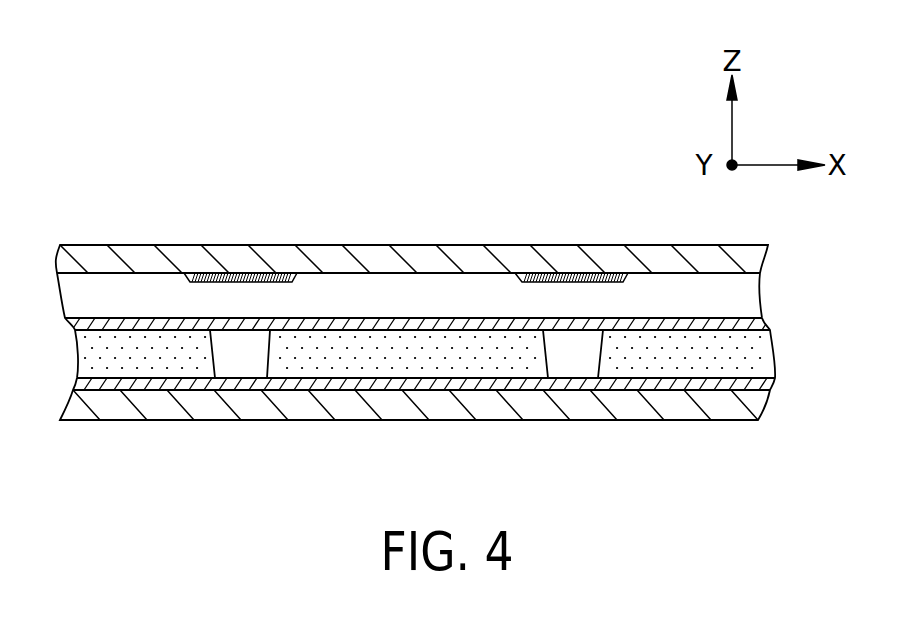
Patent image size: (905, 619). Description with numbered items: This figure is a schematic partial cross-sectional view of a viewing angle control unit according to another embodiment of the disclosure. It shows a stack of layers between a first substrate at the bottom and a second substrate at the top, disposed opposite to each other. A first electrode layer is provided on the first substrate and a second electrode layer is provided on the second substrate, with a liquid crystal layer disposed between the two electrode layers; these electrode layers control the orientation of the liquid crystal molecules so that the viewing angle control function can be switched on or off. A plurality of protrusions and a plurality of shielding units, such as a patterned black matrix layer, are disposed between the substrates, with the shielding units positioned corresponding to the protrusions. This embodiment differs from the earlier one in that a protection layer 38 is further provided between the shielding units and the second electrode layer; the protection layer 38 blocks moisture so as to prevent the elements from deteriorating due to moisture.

The protection layer 38 is at (758, 290).